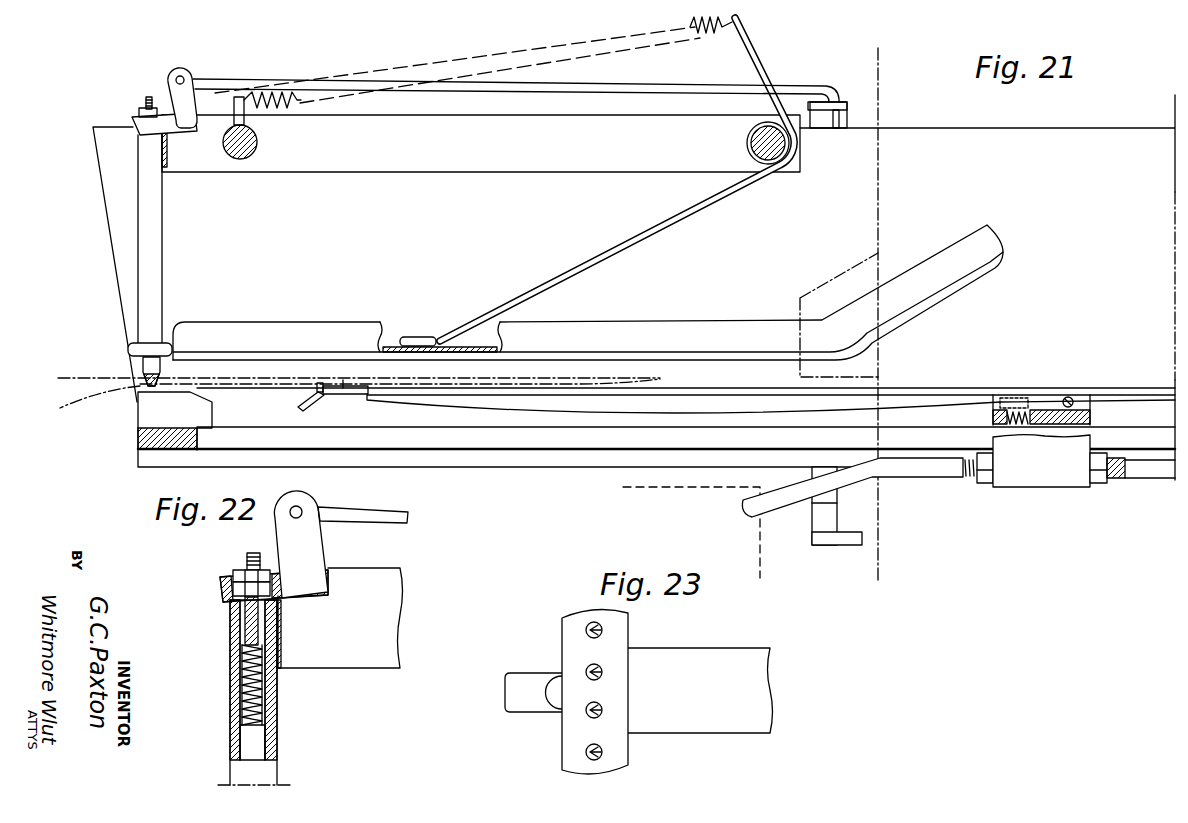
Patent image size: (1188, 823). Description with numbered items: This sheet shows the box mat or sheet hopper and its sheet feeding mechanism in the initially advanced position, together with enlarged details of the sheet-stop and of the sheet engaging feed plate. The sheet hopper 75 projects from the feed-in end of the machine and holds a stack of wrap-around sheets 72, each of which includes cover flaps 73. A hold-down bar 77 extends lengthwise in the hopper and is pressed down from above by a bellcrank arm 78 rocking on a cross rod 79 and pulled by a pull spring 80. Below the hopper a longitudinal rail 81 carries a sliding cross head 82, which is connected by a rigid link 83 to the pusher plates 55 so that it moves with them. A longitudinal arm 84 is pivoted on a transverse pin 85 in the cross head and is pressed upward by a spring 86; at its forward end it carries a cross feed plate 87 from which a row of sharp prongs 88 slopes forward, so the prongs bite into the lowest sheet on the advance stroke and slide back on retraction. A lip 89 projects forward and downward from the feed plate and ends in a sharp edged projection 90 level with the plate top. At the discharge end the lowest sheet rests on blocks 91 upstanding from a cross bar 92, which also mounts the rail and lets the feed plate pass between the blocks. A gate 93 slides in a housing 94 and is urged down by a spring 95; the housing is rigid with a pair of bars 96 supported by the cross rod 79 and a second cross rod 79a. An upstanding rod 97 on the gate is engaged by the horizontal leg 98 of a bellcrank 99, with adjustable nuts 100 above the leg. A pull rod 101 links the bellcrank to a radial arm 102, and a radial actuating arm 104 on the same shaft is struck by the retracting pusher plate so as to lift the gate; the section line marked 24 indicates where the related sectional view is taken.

In FIG. 21, the section line 24 is at (845, 573).
In FIG. 21, the pusher plates 55 is at (675, 489).
In FIG. 21, the wrap-around sheet 72 is at (228, 376).
In FIG. 21, the cover flaps 73 is at (82, 413).
In FIG. 21, the sheet hopper 75 is at (1005, 136).
In FIG. 21, the hold-down bar 77 is at (636, 340).
In FIG. 21, the bellcrank arm 78 is at (592, 254).
In FIG. 21, the cross rod 79 is at (745, 143).
In FIG. 21, the cross rod 79a is at (258, 143).
In FIG. 21, the pull spring 80 is at (280, 97).
In FIG. 21, the longitudinal rail 81 is at (558, 455).
In FIG. 21, the cross head 82 is at (1045, 478).
In FIG. 21, the rigid link 83 is at (925, 470).
In FIG. 21, the longitudinal arm 84 is at (452, 414).
In FIG. 23, the longitudinal arm 84 is at (752, 688).
In FIG. 21, the transverse pin 85 is at (1074, 397).
In FIG. 21, the spring 86 is at (1020, 394).
In FIG. 21, the cross feed plate 87 is at (355, 396).
In FIG. 23, the cross feed plate 87 is at (618, 642).
In FIG. 21, the sharp prongs 88 is at (342, 388).
In FIG. 23, the sharp prongs 88 is at (585, 712).
In FIG. 21, the lip 89 is at (300, 410).
In FIG. 23, the lip 89 is at (512, 692).
In FIG. 21, the sharp edged projection 90 is at (318, 381).
In FIG. 23, the sharp edged projection 90 is at (549, 700).
In FIG. 21, the blocks 91 is at (162, 436).
In FIG. 21, the cross bar 92 is at (213, 421).
In FIG. 21, the gate 93 is at (145, 380).
In FIG. 22, the gate 93 is at (241, 747).
In FIG. 21, the housing 94 is at (163, 246).
In FIG. 22, the housing 94 is at (278, 712).
In FIG. 22, the spring 95 is at (236, 682).
In FIG. 21, the bars 96 is at (472, 166).
In FIG. 22, the bars 96 is at (385, 645).
In FIG. 21, the upstanding rod 97 is at (148, 99).
In FIG. 22, the upstanding rod 97 is at (232, 627).
In FIG. 21, the horizontal leg 98 is at (140, 130).
In FIG. 22, the horizontal leg 98 is at (226, 590).
In FIG. 21, the bellcrank 99 is at (198, 84).
In FIG. 22, the bellcrank 99 is at (330, 545).
In FIG. 21, the adjustable nuts 100 is at (142, 113).
In FIG. 22, the adjustable nuts 100 is at (240, 579).
In FIG. 21, the pull rod 101 is at (642, 88).
In FIG. 22, the pull rod 101 is at (396, 513).
In FIG. 21, the radial arm 102 is at (838, 99).
In FIG. 21, the radial actuating arm 104 is at (850, 540).